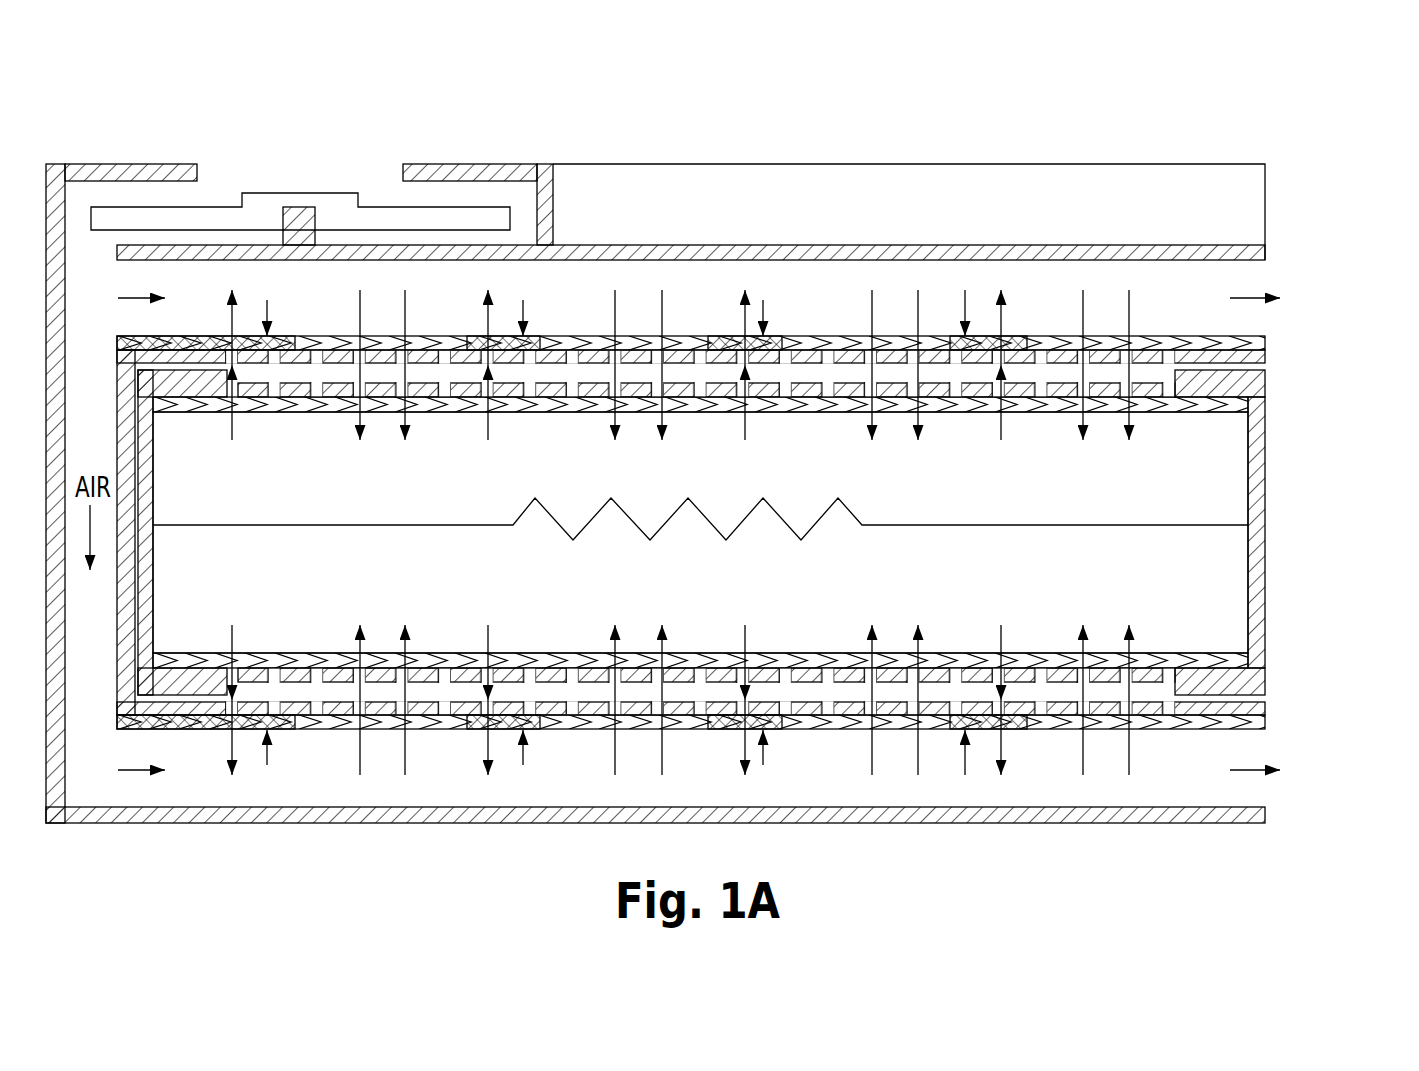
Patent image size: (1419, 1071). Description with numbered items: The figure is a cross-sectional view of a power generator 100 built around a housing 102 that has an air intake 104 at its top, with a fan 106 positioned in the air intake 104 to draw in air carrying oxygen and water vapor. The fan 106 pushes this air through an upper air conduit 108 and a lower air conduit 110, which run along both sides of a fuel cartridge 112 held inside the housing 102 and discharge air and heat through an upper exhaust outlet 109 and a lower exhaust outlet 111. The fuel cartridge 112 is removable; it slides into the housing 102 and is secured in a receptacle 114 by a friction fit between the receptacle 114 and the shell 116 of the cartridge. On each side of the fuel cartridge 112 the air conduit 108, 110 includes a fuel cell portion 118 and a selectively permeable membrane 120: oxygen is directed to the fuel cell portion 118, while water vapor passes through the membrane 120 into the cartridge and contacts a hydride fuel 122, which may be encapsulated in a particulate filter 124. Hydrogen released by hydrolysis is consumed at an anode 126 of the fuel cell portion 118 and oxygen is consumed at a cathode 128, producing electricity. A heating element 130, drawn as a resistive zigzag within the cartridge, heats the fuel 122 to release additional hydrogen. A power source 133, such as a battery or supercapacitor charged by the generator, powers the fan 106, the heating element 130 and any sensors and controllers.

The power generator 100 is at (1227, 91).
The housing 102 is at (182, 164).
The air intake 104 is at (291, 172).
The fan 106 is at (344, 193).
The air conduit 108 is at (171, 314).
The exhaust outlet 109 is at (1272, 269).
The air conduit 110 is at (168, 758).
The exhaust outlet 111 is at (1268, 749).
The fuel cartridge 112 is at (718, 533).
The receptacle 114 is at (1265, 351).
The shell 116 is at (1255, 382).
The fuel cell portion 118 is at (275, 336).
The selectively permeable membrane 120 is at (444, 336).
The fuel 122 is at (1235, 545).
The particulate filter 124 is at (1253, 406).
The anode 126 is at (147, 361).
The cathode 128 is at (214, 336).
The heating element 130 is at (1040, 525).
The power source 133 is at (1255, 200).